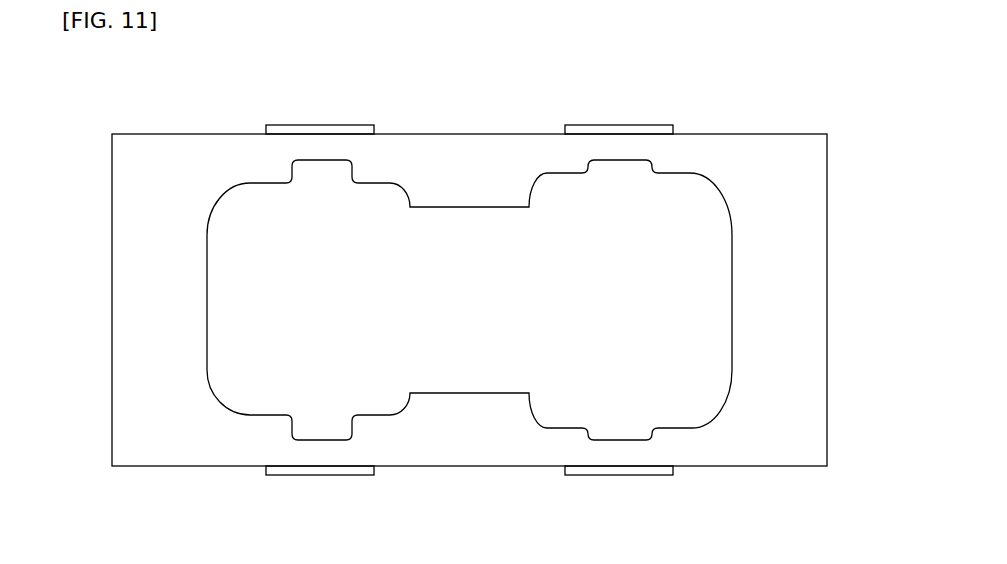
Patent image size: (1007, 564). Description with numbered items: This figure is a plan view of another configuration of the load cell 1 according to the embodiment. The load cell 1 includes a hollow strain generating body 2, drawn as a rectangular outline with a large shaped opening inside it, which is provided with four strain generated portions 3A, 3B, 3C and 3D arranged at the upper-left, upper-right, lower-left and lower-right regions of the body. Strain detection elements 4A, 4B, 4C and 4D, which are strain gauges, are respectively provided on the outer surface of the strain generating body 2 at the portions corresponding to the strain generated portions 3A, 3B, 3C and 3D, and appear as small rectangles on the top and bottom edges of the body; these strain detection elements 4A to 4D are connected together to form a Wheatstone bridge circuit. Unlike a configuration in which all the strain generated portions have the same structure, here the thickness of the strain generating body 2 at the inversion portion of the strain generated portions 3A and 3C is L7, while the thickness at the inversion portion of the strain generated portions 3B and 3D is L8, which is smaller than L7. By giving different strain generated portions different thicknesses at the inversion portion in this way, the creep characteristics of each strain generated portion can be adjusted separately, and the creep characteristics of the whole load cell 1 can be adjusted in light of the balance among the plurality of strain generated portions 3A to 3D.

The load cell 1 is at (84, 76).
The strain generating body 2 is at (195, 136).
The strain generated portion 3A is at (337, 220).
The strain generated portion 3B is at (637, 218).
The strain generated portion 3C is at (337, 410).
The strain generated portion 3D is at (637, 411).
The strain detection element 4A is at (288, 129).
The strain detection element 4B is at (600, 129).
The strain detection element 4C is at (301, 478).
The strain detection element 4D is at (598, 478).
The thickness L7 is at (363, 134).
The thickness L8 is at (662, 134).